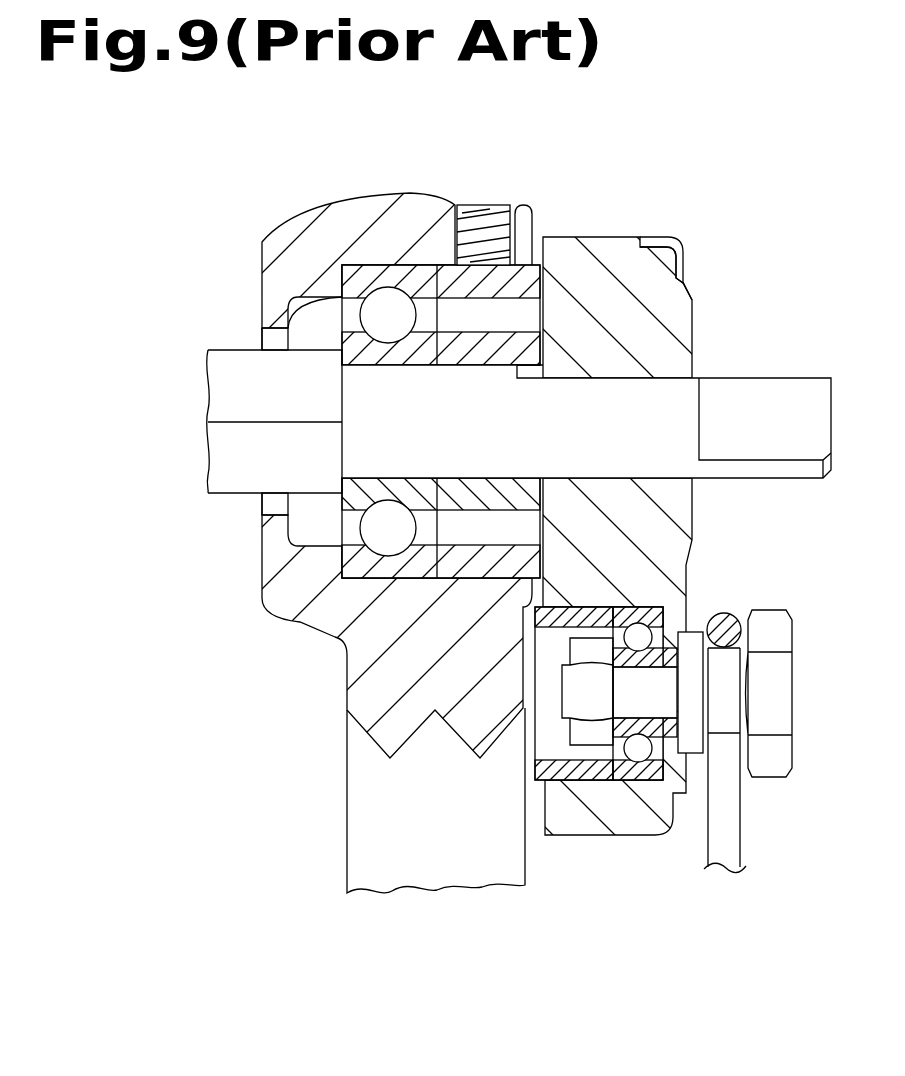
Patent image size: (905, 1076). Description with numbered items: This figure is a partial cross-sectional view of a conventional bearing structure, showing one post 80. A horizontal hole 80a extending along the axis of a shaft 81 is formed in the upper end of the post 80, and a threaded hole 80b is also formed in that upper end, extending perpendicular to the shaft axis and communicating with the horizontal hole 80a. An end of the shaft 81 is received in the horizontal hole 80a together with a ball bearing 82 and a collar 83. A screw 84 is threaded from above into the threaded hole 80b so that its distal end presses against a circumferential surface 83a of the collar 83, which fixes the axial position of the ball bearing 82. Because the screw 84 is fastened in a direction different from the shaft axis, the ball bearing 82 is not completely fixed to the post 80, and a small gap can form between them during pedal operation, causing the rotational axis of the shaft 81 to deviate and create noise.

The post 80 is at (347, 731).
The horizontal hole 80a is at (292, 542).
The threaded hole 80b is at (510, 207).
The shaft 81 is at (208, 348).
The ball bearing 82 is at (390, 266).
The collar 83 is at (532, 289).
The circumferential surface 83a is at (523, 262).
The screw 84 is at (478, 224).